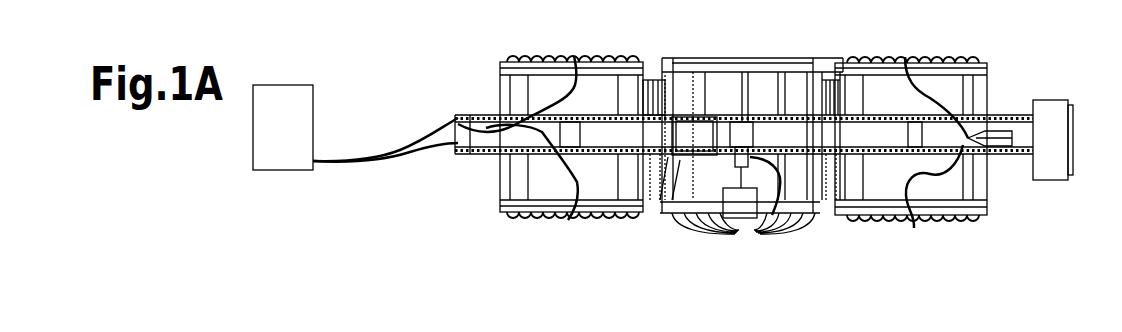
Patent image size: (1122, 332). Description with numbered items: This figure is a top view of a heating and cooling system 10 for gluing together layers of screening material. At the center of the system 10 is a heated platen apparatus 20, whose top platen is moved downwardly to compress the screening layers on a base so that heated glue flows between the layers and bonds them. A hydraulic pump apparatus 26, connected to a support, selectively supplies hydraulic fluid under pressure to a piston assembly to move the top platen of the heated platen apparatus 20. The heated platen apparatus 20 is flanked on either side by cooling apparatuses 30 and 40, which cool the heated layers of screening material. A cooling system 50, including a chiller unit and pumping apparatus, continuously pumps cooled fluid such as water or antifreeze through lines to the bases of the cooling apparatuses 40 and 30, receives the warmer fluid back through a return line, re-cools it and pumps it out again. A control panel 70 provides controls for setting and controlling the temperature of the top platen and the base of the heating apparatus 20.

The system 10 is at (490, 178).
The heated platen apparatus 20 is at (740, 230).
The hydraulic pump apparatus 26 is at (660, 207).
The cooling apparatus 30 is at (568, 219).
The cooling apparatus 40 is at (913, 230).
The cooling system 50 is at (278, 155).
The control panel 70 is at (1057, 170).